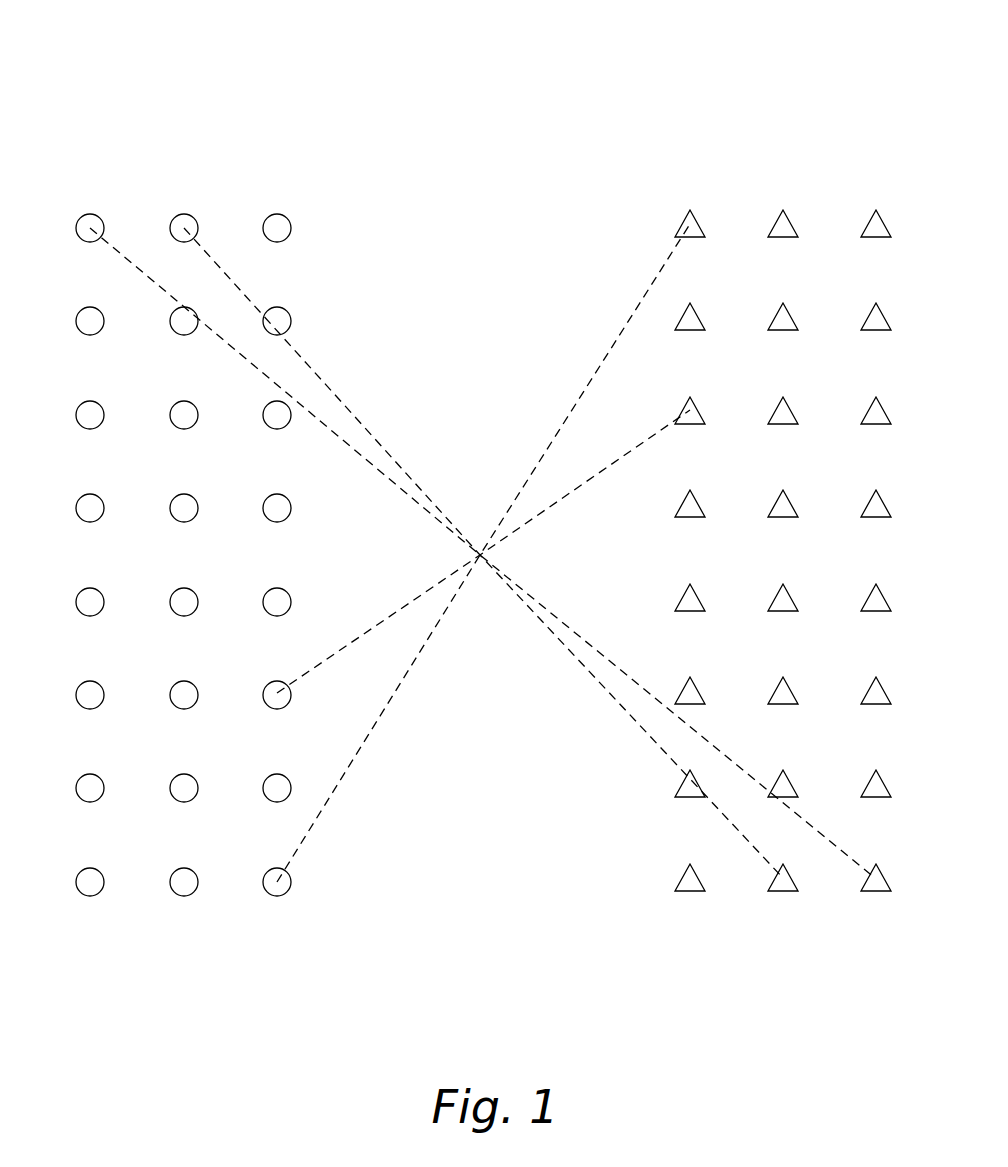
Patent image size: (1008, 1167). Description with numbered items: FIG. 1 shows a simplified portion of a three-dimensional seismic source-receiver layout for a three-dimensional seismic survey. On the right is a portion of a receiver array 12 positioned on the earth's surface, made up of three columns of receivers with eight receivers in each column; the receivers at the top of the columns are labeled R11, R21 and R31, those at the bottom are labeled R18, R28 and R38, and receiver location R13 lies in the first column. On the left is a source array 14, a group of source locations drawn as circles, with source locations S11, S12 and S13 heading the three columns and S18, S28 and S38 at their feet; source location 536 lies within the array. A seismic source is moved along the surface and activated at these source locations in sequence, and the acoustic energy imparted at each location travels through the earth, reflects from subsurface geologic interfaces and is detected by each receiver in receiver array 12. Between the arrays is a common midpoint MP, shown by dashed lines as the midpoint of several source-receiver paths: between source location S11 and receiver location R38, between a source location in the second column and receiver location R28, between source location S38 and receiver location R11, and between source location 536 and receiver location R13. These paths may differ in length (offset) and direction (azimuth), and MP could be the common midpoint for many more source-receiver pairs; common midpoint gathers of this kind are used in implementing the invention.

The source array 14 is at (175, 68).
The receiver array 12 is at (769, 70).
The source location S11 is at (91, 213).
The source element S12 is at (185, 213).
The source element S13 is at (277, 213).
The source element S18 is at (93, 896).
The source element S28 is at (184, 896).
The source location S38 is at (277, 896).
The source element 536 is at (268, 682).
The receiver location R11 is at (686, 227).
The receiver element R21 is at (779, 227).
The receiver element R31 is at (872, 227).
The receiver location R13 is at (680, 420).
The receiver element R18 is at (690, 893).
The receiver location R28 is at (783, 893).
The receiver location R38 is at (875, 893).
The common midpoint MP is at (480, 553).